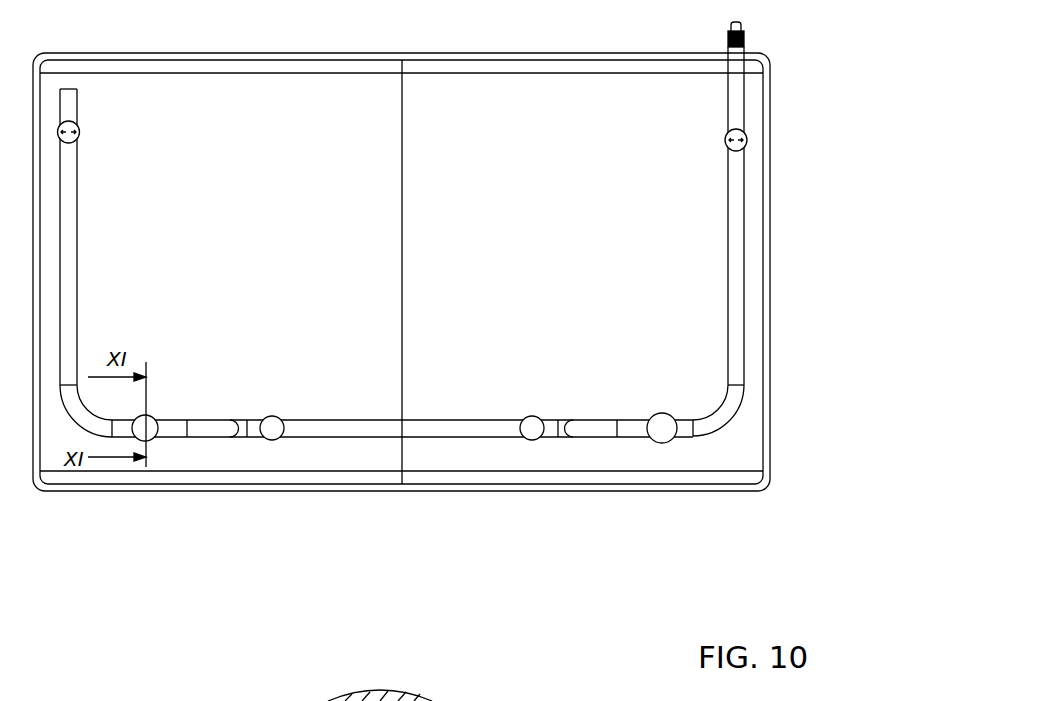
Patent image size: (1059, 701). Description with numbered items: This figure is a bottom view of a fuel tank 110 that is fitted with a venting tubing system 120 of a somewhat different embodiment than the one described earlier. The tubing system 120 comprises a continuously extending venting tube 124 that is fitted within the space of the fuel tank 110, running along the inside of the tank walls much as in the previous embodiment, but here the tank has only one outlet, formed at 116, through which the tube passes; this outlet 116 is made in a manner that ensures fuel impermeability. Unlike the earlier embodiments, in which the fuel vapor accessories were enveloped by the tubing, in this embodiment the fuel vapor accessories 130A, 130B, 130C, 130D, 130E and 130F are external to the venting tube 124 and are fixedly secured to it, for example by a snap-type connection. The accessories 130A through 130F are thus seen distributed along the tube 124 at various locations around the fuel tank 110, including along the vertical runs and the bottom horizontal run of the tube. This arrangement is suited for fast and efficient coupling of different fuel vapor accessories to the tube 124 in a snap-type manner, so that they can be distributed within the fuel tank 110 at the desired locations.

The fuel tank 110 is at (770, 345).
The outlet 116 is at (745, 38).
The venting tubing system 120 is at (477, 300).
The venting tube 124 is at (475, 428).
The fuel vapor accessory 130A is at (742, 133).
The fuel vapor accessory 130B is at (668, 434).
The fuel vapor accessory 130C is at (535, 432).
The fuel vapor accessory 130D is at (270, 440).
The fuel vapor accessory 130E is at (152, 435).
The fuel vapor accessory 130F is at (76, 129).